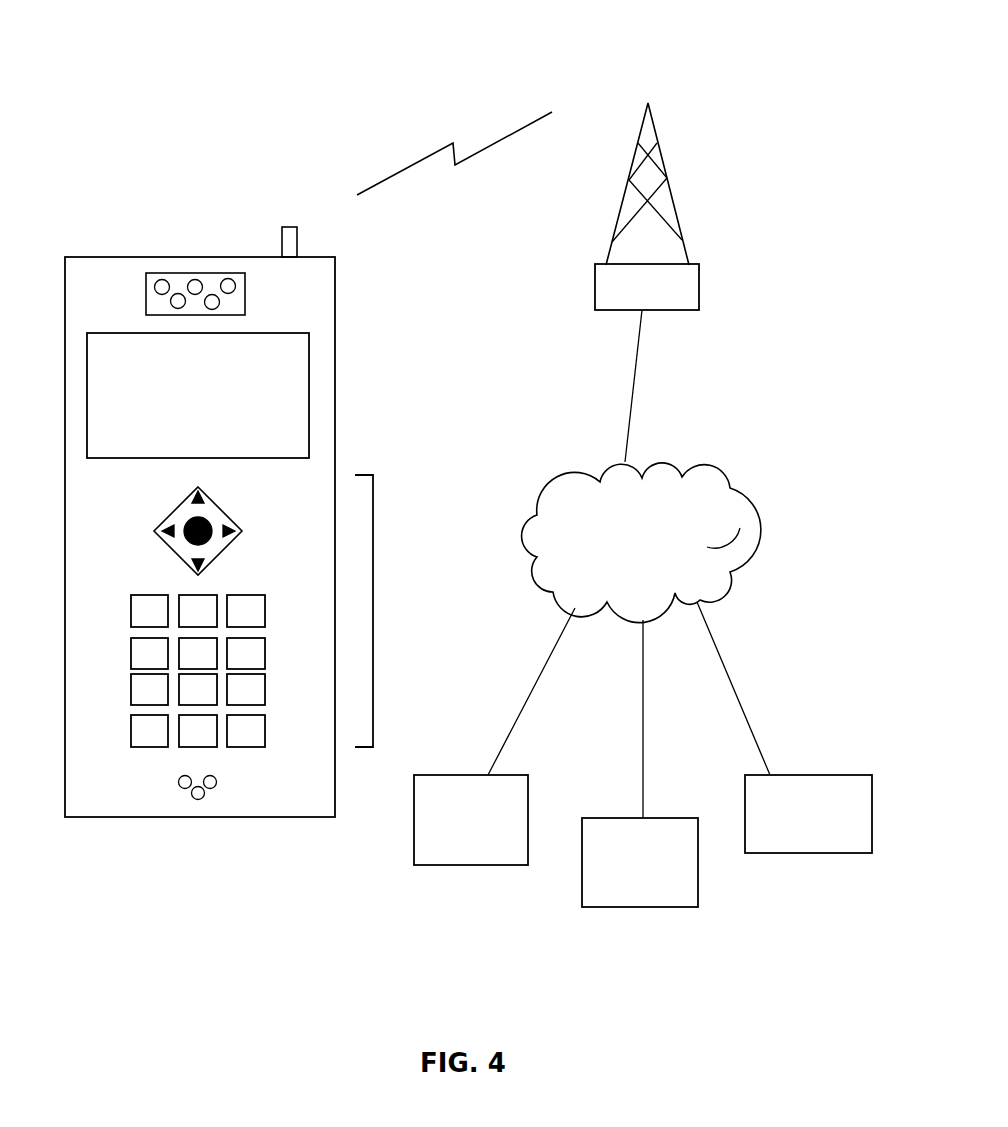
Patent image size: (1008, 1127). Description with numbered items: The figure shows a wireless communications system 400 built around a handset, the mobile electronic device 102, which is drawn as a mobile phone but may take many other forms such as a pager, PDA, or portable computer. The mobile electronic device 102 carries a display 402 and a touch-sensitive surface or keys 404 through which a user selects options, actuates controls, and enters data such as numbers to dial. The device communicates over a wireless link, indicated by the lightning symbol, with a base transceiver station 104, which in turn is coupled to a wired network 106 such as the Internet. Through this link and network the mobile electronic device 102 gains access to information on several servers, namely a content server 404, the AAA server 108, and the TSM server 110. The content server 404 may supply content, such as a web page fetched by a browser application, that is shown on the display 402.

The wireless communications system 400 is at (347, 114).
The mobile electronic device 102 is at (115, 262).
The display 402 is at (313, 385).
The keys 404 is at (373, 511).
The base transceiver station 104 is at (699, 278).
The wired network 106 is at (747, 488).
The AAA server 108 is at (630, 907).
The TSM server 110 is at (806, 853).